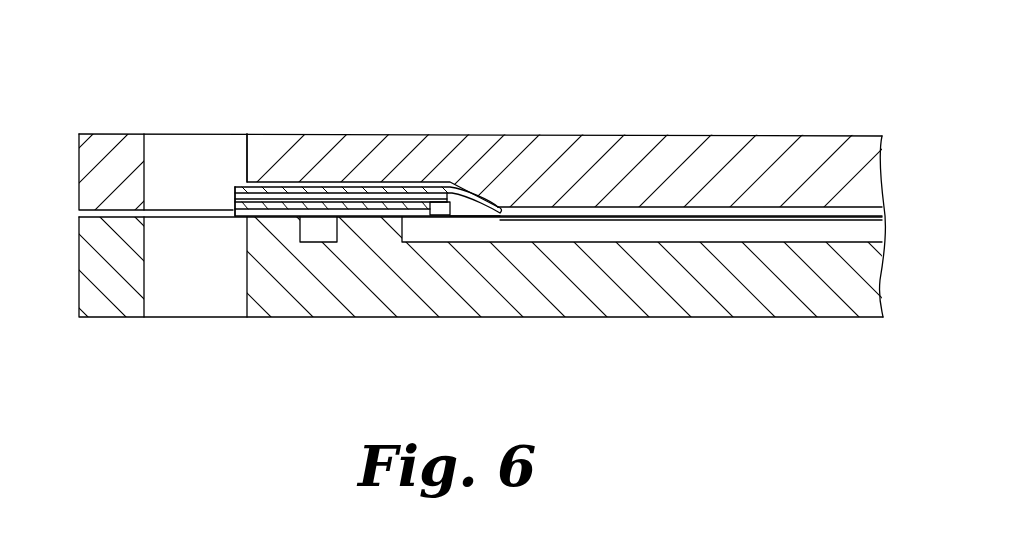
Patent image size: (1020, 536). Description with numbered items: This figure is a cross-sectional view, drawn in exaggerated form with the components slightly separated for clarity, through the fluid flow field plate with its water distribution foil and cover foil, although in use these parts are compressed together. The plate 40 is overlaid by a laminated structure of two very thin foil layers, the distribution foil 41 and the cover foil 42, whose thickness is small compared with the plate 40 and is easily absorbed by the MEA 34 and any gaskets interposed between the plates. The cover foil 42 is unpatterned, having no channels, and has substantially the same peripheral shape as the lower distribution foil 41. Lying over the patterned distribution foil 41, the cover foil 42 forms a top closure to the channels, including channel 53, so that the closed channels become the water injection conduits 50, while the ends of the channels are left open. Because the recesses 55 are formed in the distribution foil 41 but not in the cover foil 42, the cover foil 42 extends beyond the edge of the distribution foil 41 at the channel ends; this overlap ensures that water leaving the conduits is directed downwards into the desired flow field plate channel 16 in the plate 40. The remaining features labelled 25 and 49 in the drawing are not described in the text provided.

The flow field plate channel 16 is at (833, 232).
The slot 25 is at (170, 145).
The MEA 34 is at (113, 162).
The plate 40 is at (102, 277).
The distribution foil 41 is at (233, 203).
The cover foil 42 is at (458, 182).
The strip end 49 is at (462, 216).
The water injection conduits 50 is at (236, 200).
The channel 53 is at (380, 192).
The recesses 55 is at (444, 205).